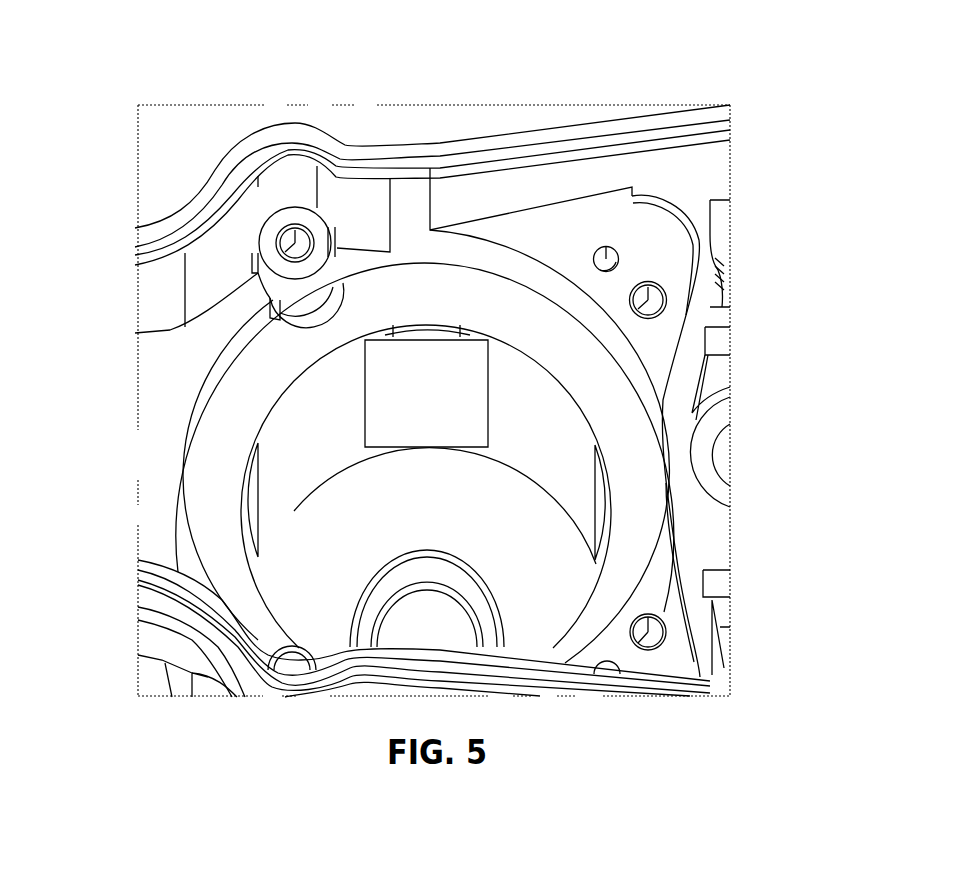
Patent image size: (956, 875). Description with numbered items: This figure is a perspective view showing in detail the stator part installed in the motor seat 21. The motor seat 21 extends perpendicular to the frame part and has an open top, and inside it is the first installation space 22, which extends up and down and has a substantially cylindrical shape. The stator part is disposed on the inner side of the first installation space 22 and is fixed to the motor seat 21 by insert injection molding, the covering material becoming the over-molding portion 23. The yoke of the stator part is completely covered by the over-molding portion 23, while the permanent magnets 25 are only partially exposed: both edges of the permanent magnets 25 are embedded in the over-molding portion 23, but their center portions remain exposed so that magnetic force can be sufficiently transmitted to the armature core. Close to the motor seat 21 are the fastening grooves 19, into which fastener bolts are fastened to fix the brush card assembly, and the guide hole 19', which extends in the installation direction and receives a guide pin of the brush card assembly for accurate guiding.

The fastening grooves 19 is at (532, 163).
The guide hole 19' is at (708, 251).
The motor seat 21 is at (168, 541).
The first installation space 22 is at (510, 498).
The over-molding portion 23 is at (282, 437).
The permanent magnet 25 is at (428, 340).